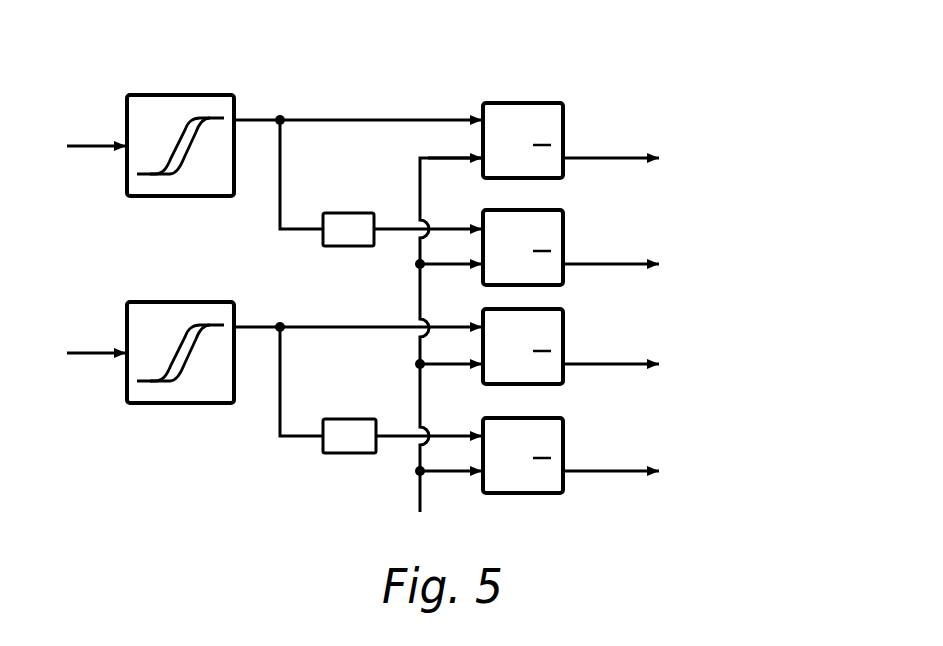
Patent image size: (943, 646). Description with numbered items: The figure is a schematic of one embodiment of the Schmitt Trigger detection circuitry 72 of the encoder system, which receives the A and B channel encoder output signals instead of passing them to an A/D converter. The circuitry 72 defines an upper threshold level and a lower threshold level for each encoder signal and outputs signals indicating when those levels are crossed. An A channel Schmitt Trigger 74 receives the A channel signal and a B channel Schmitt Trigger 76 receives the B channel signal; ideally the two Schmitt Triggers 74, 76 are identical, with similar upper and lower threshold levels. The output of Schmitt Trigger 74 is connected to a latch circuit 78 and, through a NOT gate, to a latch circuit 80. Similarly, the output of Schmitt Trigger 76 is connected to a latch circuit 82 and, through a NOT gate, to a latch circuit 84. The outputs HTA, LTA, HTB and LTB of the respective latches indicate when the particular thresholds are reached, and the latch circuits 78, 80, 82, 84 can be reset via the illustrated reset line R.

The Schmitt Trigger detection circuitry 72 is at (732, 72).
The A channel Schmitt Trigger 74 is at (175, 95).
The B channel Schmitt Trigger 76 is at (178, 302).
The latch circuit 78 is at (563, 121).
The latch circuit 80 is at (563, 229).
The latch circuit 82 is at (563, 328).
The latch circuit 84 is at (563, 436).